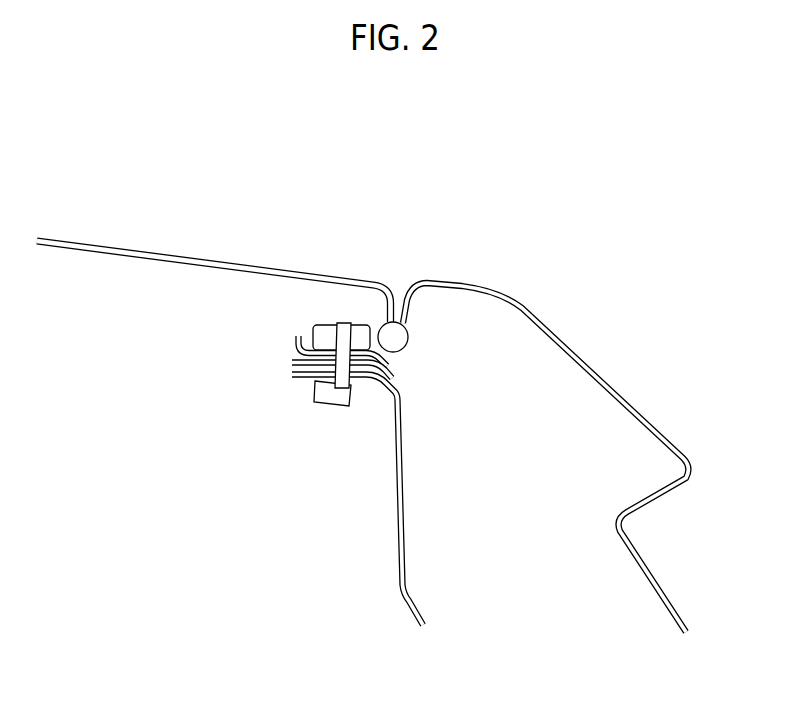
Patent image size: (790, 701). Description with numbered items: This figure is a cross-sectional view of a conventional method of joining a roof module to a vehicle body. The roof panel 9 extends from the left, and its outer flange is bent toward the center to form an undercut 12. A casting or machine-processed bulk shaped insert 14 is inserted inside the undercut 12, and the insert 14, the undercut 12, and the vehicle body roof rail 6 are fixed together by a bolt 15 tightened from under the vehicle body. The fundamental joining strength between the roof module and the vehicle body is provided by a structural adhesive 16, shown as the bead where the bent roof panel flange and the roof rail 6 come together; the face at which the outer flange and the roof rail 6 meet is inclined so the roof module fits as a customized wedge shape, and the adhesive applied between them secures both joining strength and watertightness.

The roof rail 6 is at (520, 310).
The roof panel 9 is at (199, 263).
The undercut 12 is at (294, 344).
The insert 14 is at (330, 331).
The bolt 15 is at (330, 397).
The structural adhesive 16 is at (393, 321).